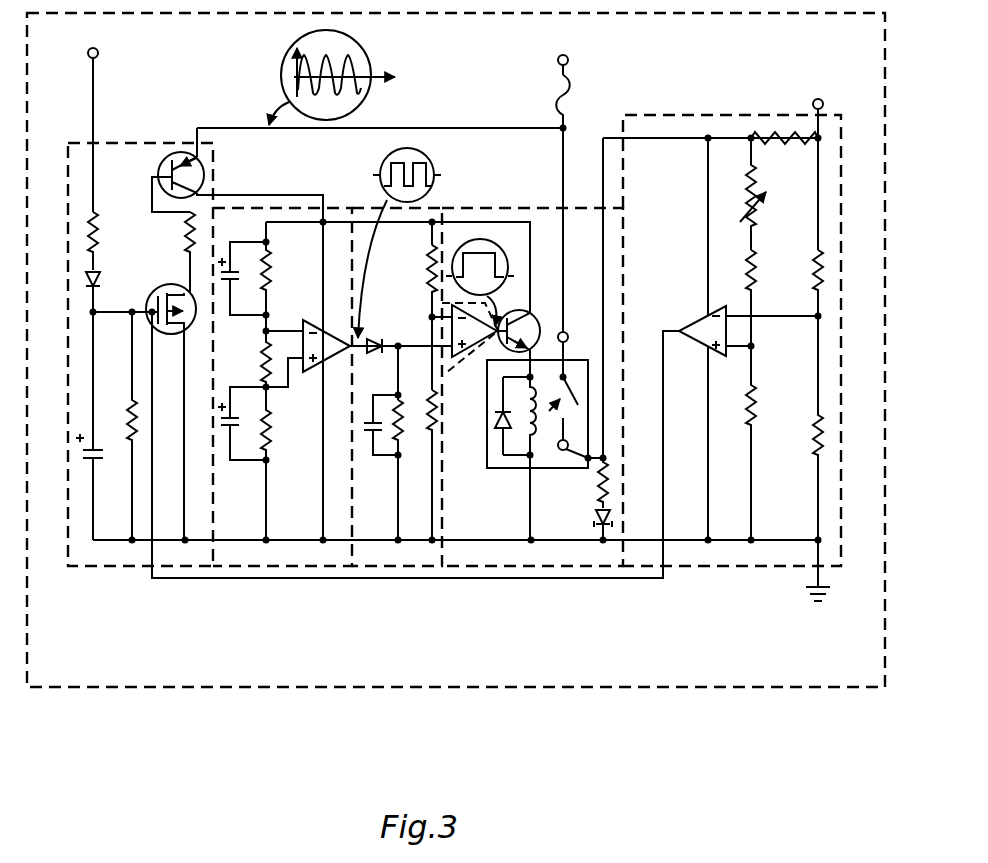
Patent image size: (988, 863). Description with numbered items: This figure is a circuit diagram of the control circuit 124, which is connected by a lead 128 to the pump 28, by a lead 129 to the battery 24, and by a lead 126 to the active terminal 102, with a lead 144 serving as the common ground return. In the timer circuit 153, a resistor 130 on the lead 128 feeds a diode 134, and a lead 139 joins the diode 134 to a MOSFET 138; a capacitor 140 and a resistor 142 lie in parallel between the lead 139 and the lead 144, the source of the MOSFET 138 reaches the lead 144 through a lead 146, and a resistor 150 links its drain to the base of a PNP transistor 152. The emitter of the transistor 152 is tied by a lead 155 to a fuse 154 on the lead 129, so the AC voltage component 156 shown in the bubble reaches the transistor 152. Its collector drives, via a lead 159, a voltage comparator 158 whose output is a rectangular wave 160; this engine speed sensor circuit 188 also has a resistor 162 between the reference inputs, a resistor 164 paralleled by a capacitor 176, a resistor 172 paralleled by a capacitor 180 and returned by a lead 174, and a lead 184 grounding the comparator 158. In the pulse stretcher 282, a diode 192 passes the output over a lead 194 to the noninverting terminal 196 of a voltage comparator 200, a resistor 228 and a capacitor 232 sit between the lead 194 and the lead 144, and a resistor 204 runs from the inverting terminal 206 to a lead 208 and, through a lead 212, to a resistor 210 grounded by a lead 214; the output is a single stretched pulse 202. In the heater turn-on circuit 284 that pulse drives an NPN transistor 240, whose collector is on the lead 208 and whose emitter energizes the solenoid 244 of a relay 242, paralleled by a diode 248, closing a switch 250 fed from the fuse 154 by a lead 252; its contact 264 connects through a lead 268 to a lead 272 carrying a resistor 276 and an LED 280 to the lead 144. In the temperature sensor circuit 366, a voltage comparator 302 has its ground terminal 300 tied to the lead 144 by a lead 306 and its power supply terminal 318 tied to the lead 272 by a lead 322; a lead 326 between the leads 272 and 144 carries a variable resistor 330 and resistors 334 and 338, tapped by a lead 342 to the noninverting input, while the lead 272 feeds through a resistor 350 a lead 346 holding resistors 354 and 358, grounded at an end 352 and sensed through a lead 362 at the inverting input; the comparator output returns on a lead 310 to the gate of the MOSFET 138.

The control circuit 124 is at (88, 688).
The timer circuit 153 is at (78, 568).
The engine speed sensor circuit 188 is at (225, 568).
The pulse stretcher 282 is at (382, 568).
The heater turn-on circuit 284 is at (555, 568).
The temperature sensor circuit 366 is at (850, 510).
The lead 208 is at (493, 208).
The lead 144 is at (118, 528).
The pump 28 is at (100, 39).
The lead 128 is at (104, 84).
The resistor 130 is at (97, 228).
The diode 134 is at (97, 282).
The lead 139 is at (112, 312).
The capacitor 140 is at (104, 456).
The resistor 142 is at (128, 420).
The PNP transistor 152 is at (157, 170).
The resistor 150 is at (184, 240).
The metal oxide semiconductor field effect transistor 138 is at (170, 284).
The lead 146 is at (183, 438).
The lead 310 is at (153, 503).
The lead 159 is at (282, 180).
The AC voltage component 156 is at (366, 50).
The lead 155 is at (425, 128).
The rectangular wave 160 is at (430, 158).
The battery 24 is at (560, 41).
The lead 129 is at (556, 68).
The fuse 154 is at (558, 100).
The capacitor 176 is at (232, 268).
The resistor 164 is at (272, 270).
The resistor 162 is at (262, 338).
The capacitor 180 is at (262, 378).
The resistor 172 is at (272, 430).
The lead 174 is at (264, 508).
The voltage comparator 158 is at (315, 322).
The lead 184 is at (321, 490).
The diode 192 is at (372, 338).
The lead 194 is at (398, 340).
The lead 212 is at (420, 378).
The resistor 228 is at (399, 438).
The capacitor 232 is at (373, 435).
The resistor 204 is at (428, 245).
The inverting input terminal 206 is at (428, 300).
The noninverting input terminal 196 is at (430, 380).
The resistor 210 is at (437, 402).
The lead 214 is at (432, 515).
The voltage comparator 200 is at (473, 357).
The stretched pulse 202 is at (510, 238).
The NPN transistor 240 is at (516, 312).
The electromechanical relay 242 is at (513, 470).
The solenoid 244 is at (518, 440).
The diode 248 is at (492, 426).
The lead 252 is at (578, 270).
The switch 250 is at (586, 330).
The contact 264 is at (580, 436).
The lead 268 is at (600, 500).
The resistor 276 is at (598, 520).
The light emitting diode 280 is at (600, 540).
The lead 272 is at (636, 140).
The resistor 350 is at (786, 142).
The active terminal 102 is at (823, 102).
The lead 126 is at (820, 126).
The lead 346 is at (820, 172).
The resistor 354 is at (813, 283).
The lead 362 is at (762, 316).
The resistor 358 is at (814, 440).
The end 352 is at (826, 586).
The variable resistor 330 is at (776, 212).
The resistor 334 is at (756, 263).
The lead 342 is at (754, 344).
The resistor 338 is at (757, 400).
The lead 326 is at (755, 482).
The lead 322 is at (706, 226).
The voltage comparator 302 is at (690, 330).
The power supply terminal 318 is at (706, 310).
The ground terminal 300 is at (712, 352).
The lead 306 is at (709, 452).